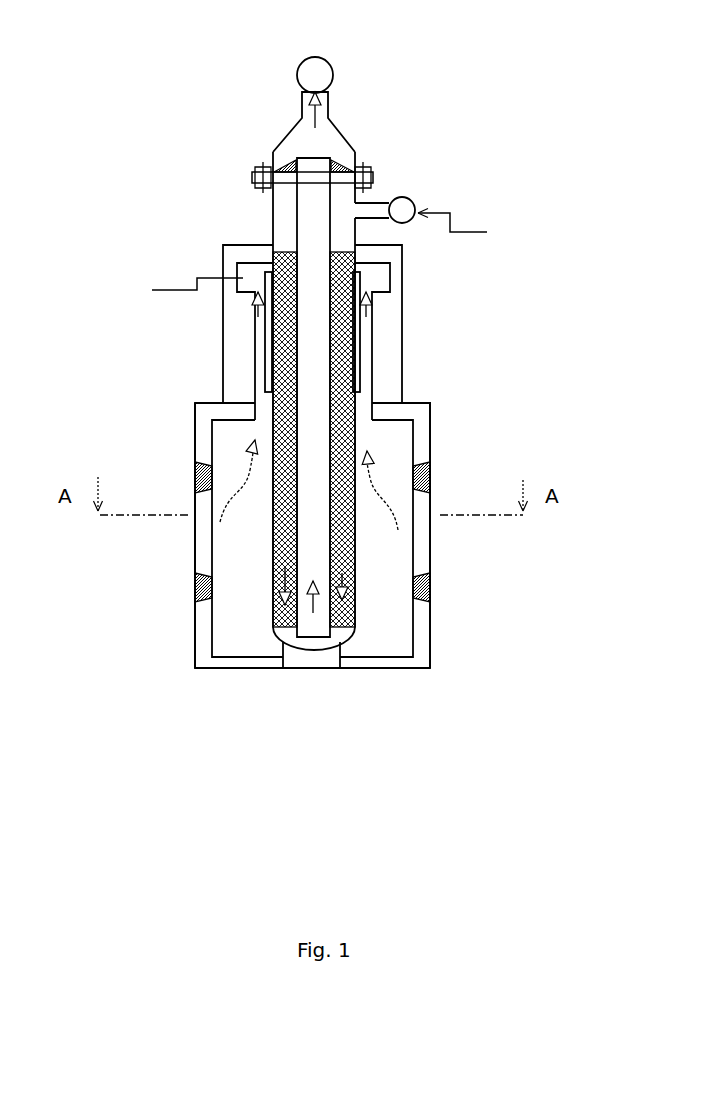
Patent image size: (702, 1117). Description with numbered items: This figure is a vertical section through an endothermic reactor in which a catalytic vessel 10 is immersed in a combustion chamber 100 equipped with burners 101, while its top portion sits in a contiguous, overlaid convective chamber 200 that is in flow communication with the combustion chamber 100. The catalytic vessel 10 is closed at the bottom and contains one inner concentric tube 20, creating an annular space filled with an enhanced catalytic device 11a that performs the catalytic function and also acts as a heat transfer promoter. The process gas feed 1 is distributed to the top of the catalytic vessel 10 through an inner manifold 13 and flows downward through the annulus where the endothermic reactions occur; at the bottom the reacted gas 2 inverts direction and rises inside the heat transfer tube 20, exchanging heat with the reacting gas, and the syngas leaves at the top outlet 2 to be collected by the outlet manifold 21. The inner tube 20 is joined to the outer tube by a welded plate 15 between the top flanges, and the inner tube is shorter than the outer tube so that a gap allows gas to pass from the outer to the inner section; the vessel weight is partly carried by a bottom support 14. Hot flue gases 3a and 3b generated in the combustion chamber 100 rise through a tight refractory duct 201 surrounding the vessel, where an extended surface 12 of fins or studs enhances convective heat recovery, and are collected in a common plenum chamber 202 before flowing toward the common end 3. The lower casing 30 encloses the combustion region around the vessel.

The process gas feed 1 is at (465, 229).
The reacted gas / top outlet 2 is at (312, 143).
The common end / top exit 3 is at (170, 290).
The hot flue gas 3a is at (237, 496).
The hot flue gas 3b is at (382, 503).
The catalytic vessel 10 is at (359, 238).
The enhanced catalytic device 11a is at (338, 469).
The extended surface 12 is at (362, 358).
The inner manifold 13 is at (419, 199).
The bottom support 14 is at (315, 661).
The welded plate 15 is at (281, 168).
The inner concentric tube 20 is at (336, 424).
The outlet manifold 21 is at (332, 56).
The lower casing 30 is at (190, 427).
The combustion chamber 100 is at (434, 548).
The burner 101 is at (185, 585).
The convective chamber 200 is at (225, 335).
The refractory duct 201 is at (260, 392).
The common plenum chamber 202 is at (241, 264).